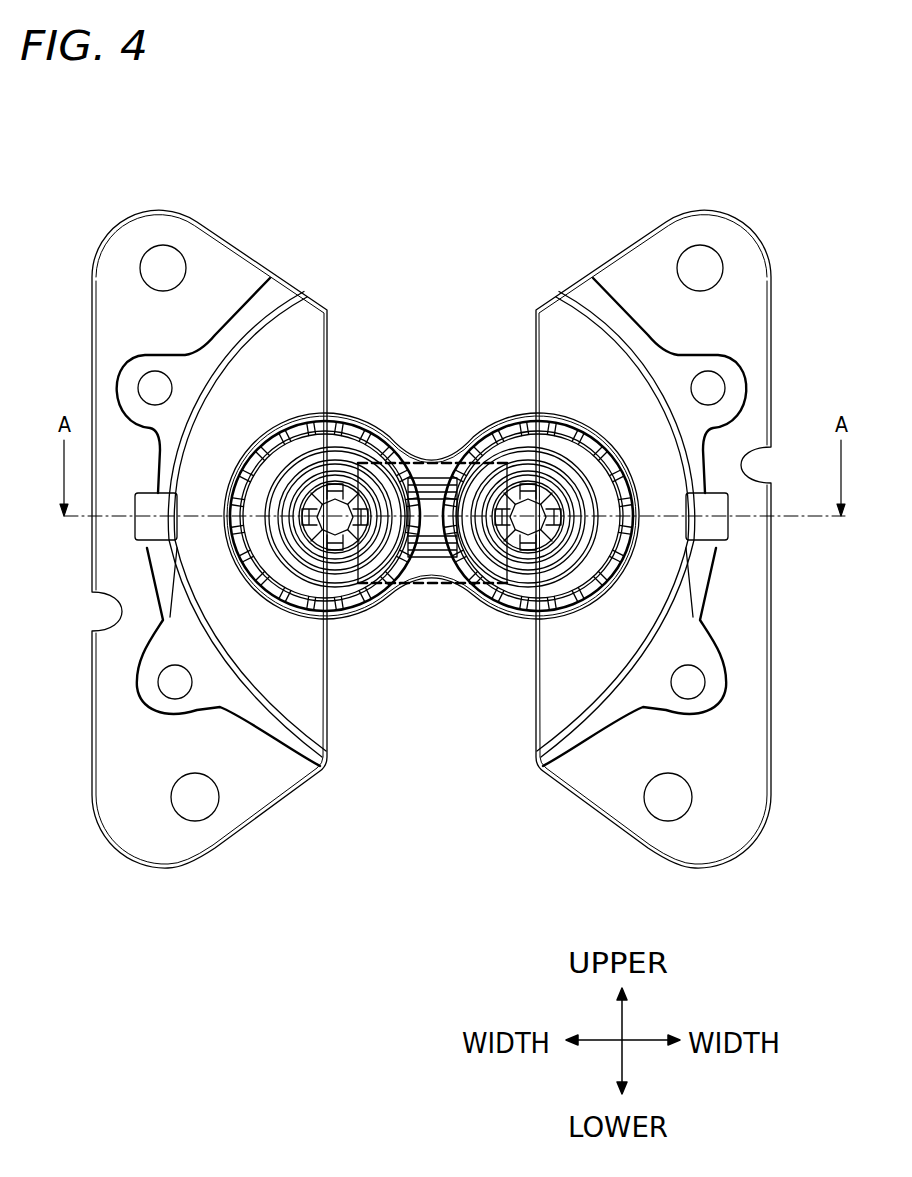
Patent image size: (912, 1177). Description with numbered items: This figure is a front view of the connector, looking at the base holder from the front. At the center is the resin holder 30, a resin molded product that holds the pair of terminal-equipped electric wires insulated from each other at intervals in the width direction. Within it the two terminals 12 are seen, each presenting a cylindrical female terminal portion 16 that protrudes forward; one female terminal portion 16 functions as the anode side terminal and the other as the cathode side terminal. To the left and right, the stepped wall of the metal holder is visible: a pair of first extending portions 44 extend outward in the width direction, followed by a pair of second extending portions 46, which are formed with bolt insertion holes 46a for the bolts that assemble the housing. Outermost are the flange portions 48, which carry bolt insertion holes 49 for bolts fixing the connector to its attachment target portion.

The terminal 12 is at (338, 585).
The female terminal portion 16 is at (431, 671).
The resin holder 30 is at (548, 410).
The first extending portion 44 is at (293, 345).
The second extending portion 46 is at (190, 375).
The bolt insertion hole 46a is at (722, 392).
The flange portion 48 is at (122, 793).
The bolt insertion hole 49 is at (662, 803).